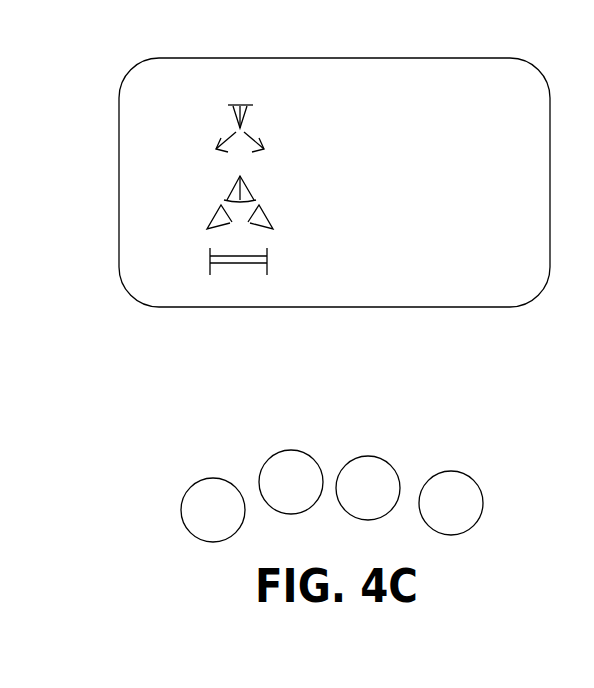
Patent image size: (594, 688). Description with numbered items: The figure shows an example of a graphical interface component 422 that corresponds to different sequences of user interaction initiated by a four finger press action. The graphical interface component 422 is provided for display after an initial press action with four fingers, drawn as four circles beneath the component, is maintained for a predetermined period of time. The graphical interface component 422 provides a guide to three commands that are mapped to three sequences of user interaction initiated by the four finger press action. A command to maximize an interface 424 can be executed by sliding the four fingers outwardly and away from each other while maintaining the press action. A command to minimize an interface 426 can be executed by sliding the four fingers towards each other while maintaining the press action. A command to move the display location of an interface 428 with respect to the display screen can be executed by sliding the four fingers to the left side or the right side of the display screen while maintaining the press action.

The graphical interface component 422 is at (315, 58).
The command to maximize an interface 424 is at (208, 137).
The command to minimize an interface 426 is at (208, 201).
The command to move the display location of an interface 428 is at (210, 267).